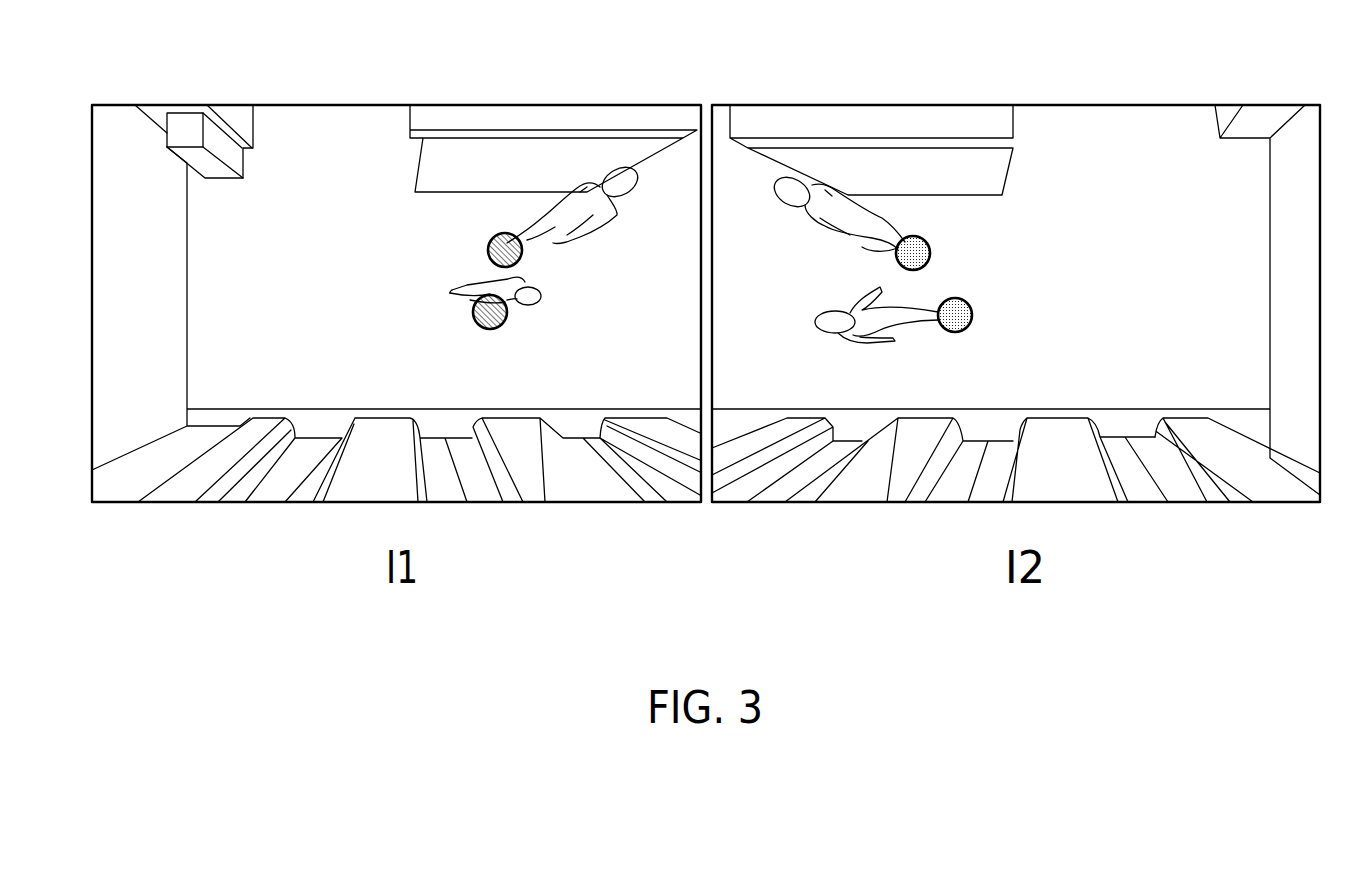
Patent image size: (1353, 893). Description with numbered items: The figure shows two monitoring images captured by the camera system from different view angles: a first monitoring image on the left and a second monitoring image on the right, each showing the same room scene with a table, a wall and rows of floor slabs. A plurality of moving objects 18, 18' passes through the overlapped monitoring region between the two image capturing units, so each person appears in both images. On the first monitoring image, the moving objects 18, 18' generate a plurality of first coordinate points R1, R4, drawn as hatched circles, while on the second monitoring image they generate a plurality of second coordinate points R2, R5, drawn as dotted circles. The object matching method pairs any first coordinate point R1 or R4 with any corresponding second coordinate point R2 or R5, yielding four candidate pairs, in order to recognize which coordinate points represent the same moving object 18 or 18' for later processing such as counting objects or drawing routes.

The moving object 18 is at (706, 213).
The moving object 18' is at (701, 334).
The first coordinate point R1 is at (488, 246).
The first coordinate point R4 is at (495, 329).
The second coordinate point R2 is at (936, 253).
The second coordinate point R5 is at (976, 316).